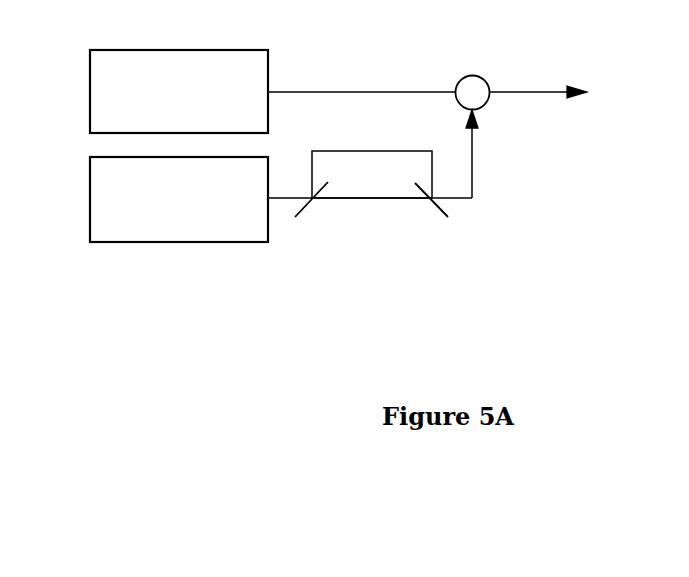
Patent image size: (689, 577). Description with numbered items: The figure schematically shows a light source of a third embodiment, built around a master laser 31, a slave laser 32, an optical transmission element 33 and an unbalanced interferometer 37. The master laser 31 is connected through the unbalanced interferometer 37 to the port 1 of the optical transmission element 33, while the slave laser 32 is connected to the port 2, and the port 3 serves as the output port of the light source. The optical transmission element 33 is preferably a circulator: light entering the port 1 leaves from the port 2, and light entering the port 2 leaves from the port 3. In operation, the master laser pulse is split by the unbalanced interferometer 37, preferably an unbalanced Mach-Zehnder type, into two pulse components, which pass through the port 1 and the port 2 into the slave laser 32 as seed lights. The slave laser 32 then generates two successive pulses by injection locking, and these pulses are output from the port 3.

The master laser 31 is at (179, 199).
The slave laser 32 is at (179, 91).
The optical transmission element 33 is at (473, 93).
The unbalanced interferometer 37 is at (370, 188).
The port 1 is at (462, 153).
The port 2 is at (361, 80).
The port 3 is at (538, 83).